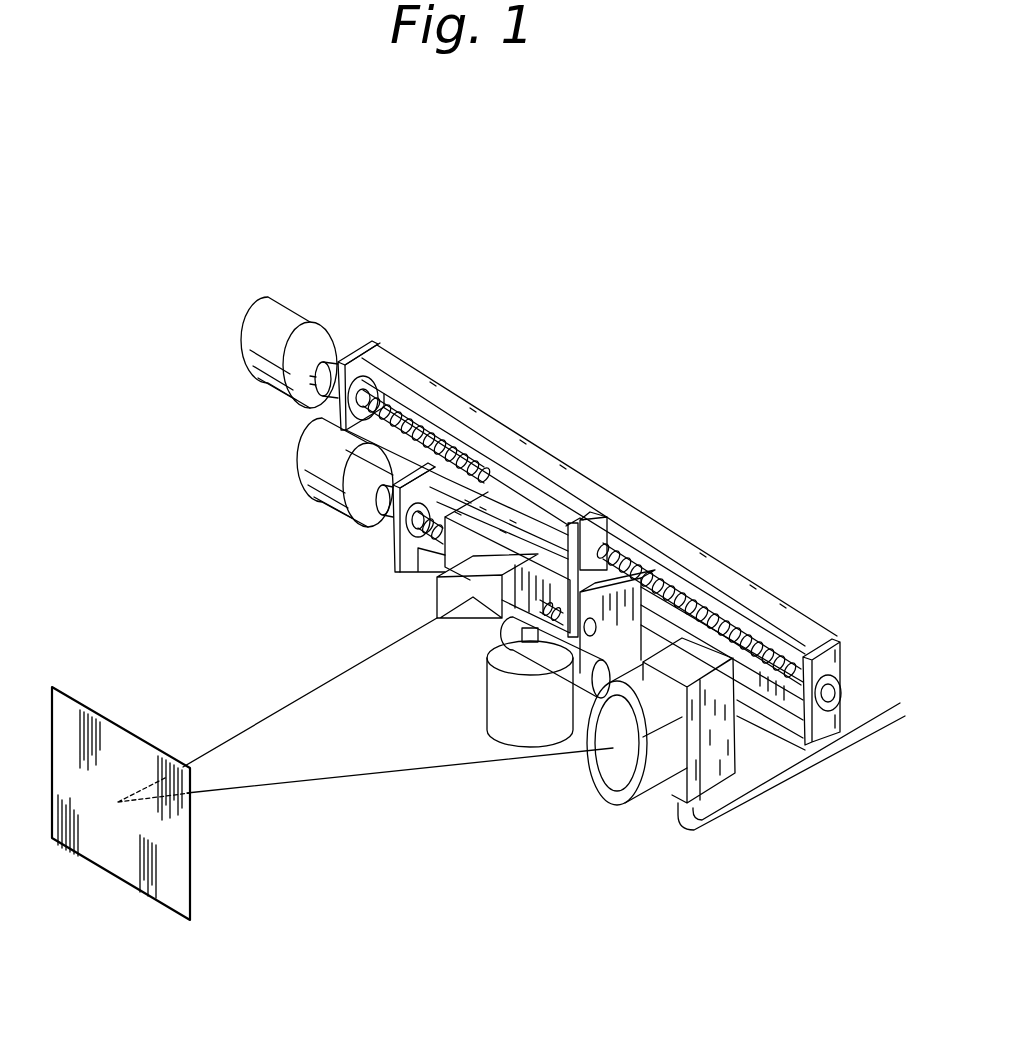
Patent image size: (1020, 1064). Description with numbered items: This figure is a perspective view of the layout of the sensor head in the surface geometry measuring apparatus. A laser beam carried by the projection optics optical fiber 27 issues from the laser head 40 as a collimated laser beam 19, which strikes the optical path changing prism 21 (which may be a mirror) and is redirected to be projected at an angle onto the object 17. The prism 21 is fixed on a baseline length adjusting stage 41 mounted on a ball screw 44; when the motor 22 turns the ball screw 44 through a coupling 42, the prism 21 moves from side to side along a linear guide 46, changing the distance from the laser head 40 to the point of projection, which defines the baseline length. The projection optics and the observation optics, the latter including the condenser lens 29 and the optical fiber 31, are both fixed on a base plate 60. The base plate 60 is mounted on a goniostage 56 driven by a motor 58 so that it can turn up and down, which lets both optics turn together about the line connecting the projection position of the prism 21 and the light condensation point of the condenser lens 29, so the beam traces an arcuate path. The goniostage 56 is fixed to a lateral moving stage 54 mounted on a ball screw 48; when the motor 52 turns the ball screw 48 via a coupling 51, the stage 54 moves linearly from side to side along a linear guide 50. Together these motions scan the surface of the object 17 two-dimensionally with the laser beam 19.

The object 17 is at (105, 828).
The collimated laser beam 19 is at (300, 690).
The optical path changing prism 21 is at (447, 593).
The motor 22 is at (320, 463).
The projection optics optical fiber 27 is at (862, 667).
The condenser lens 29 is at (647, 777).
The optical fiber 31 is at (748, 803).
The laser head 40 is at (580, 765).
The baseline length adjusting stage 41 is at (457, 548).
The coupling 42 is at (383, 500).
The ball screw 44 is at (625, 545).
The linear guide 46 is at (603, 538).
The ball screw 48 is at (470, 463).
The linear guide 50 is at (410, 383).
The coupling 51 is at (322, 338).
The motor 52 is at (262, 327).
The lateral moving stage 54 is at (547, 488).
The goniostage 56 is at (567, 517).
The motor 58 is at (513, 727).
The base plate 60 is at (657, 625).